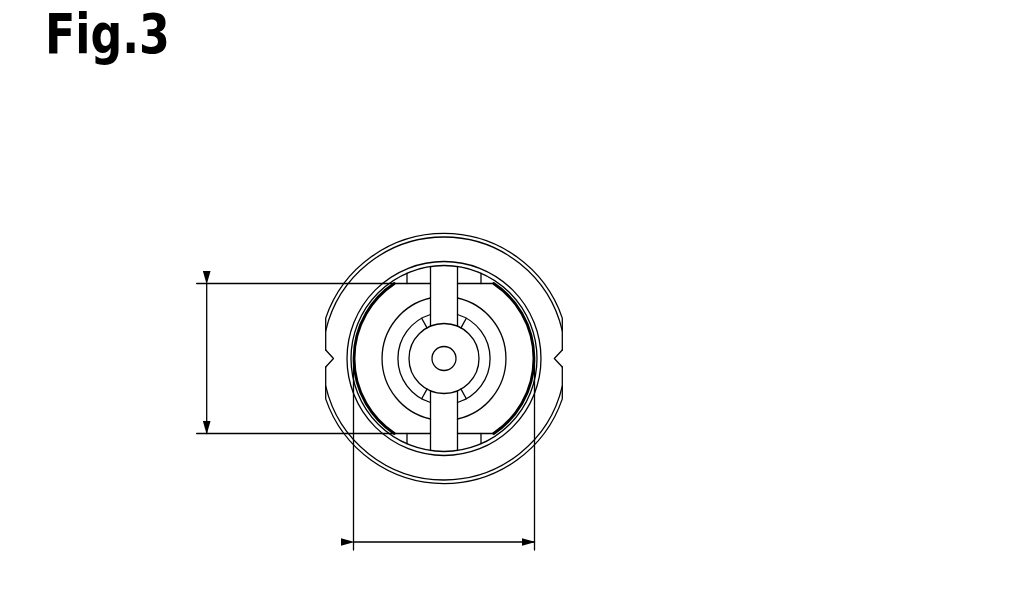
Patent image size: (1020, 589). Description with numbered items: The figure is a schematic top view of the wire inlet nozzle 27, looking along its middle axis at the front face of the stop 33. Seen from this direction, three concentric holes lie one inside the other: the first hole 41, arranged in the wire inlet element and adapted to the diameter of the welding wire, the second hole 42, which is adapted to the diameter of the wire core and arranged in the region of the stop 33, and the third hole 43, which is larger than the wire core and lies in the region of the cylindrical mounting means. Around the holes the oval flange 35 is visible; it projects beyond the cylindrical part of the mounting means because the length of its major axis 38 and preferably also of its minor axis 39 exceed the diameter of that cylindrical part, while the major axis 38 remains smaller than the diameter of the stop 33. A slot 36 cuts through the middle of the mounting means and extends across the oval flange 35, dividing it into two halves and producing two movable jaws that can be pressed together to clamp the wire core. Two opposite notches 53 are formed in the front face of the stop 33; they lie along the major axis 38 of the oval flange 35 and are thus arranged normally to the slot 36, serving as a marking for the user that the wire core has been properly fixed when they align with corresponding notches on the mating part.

The wire inlet nozzle 27 is at (451, 142).
The stop 33 is at (494, 245).
The oval flange 35 is at (513, 335).
The slot 36 is at (442, 293).
The major axis 38 is at (444, 455).
The minor axis 39 is at (282, 359).
The first hole 41 is at (441, 357).
The second hole 42 is at (423, 367).
The third hole 43 is at (477, 377).
The notches 53 is at (317, 368).